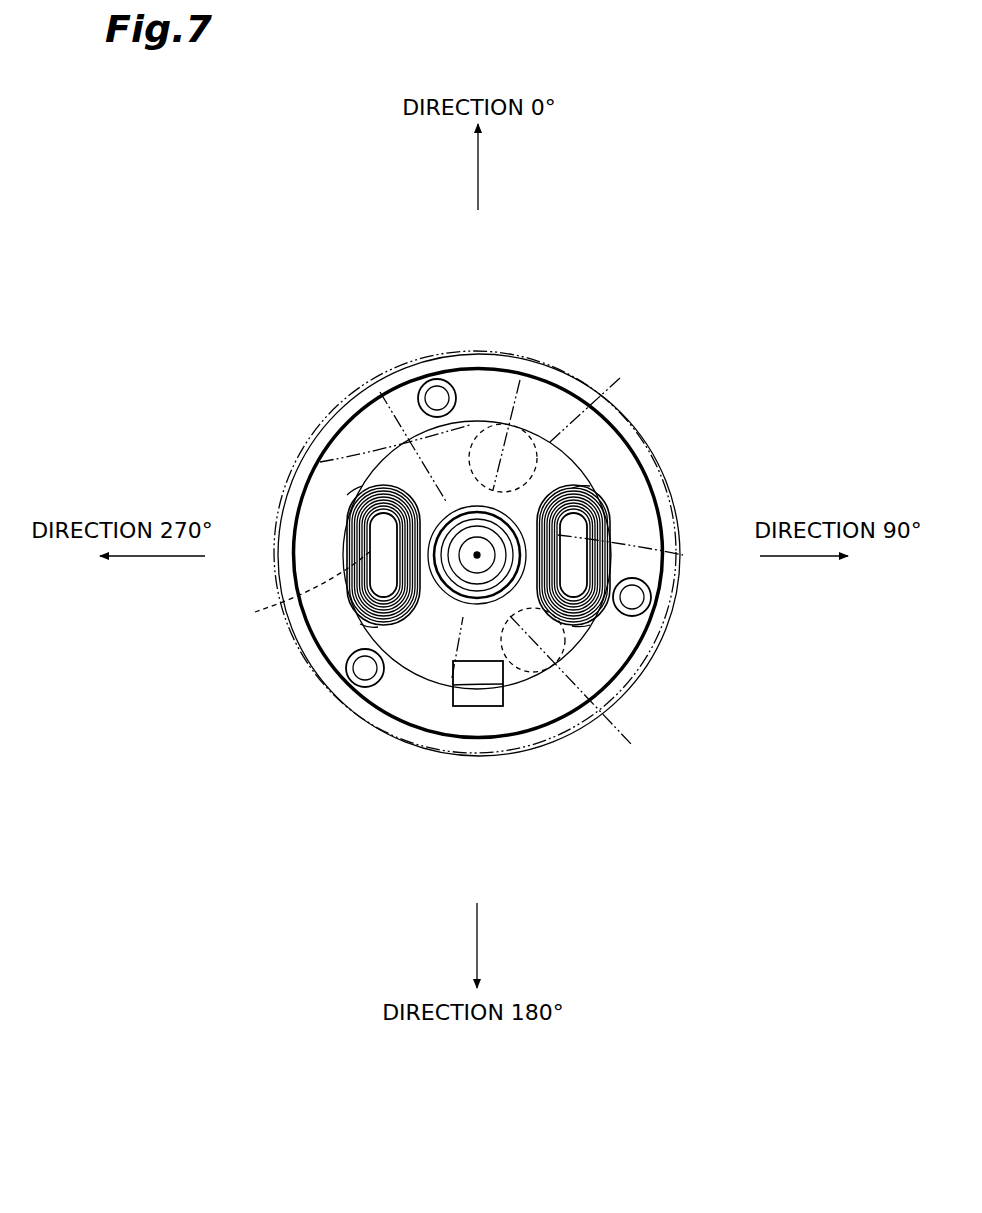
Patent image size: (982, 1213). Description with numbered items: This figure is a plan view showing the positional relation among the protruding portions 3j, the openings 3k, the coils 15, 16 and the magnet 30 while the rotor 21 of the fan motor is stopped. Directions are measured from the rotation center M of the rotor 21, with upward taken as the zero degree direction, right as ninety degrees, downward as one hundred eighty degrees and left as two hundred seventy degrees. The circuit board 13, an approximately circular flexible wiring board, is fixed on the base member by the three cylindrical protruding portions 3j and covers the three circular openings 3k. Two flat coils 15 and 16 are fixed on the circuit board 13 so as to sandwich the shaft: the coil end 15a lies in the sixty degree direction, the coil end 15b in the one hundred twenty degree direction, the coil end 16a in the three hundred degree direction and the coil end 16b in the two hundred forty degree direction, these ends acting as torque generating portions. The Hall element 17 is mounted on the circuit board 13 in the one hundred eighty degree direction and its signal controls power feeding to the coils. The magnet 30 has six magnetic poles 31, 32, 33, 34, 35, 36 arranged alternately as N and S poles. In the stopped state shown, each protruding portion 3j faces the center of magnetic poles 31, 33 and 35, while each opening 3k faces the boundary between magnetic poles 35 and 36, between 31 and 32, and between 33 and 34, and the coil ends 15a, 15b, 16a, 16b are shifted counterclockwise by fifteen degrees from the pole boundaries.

The rotor 21 is at (484, 350).
The circuit board 13 is at (612, 440).
The magnet 30 is at (427, 447).
The magnetic pole 34 is at (352, 468).
The magnetic pole 35 is at (386, 440).
The magnetic pole 36 is at (613, 445).
The rotation center M is at (477, 555).
The coil 16 is at (345, 553).
The coil end 16a is at (350, 488).
The coil end 16b is at (375, 625).
The coil 15 is at (612, 518).
The coil end 15a is at (578, 484).
The coil end 15b is at (590, 632).
The magnetic pole 31 is at (578, 546).
The magnetic pole 32 is at (535, 695).
The magnetic pole 33 is at (416, 693).
The Hall element 17 is at (485, 706).
The protruding portion 3j is at (437, 379).
The opening 3k is at (520, 424).